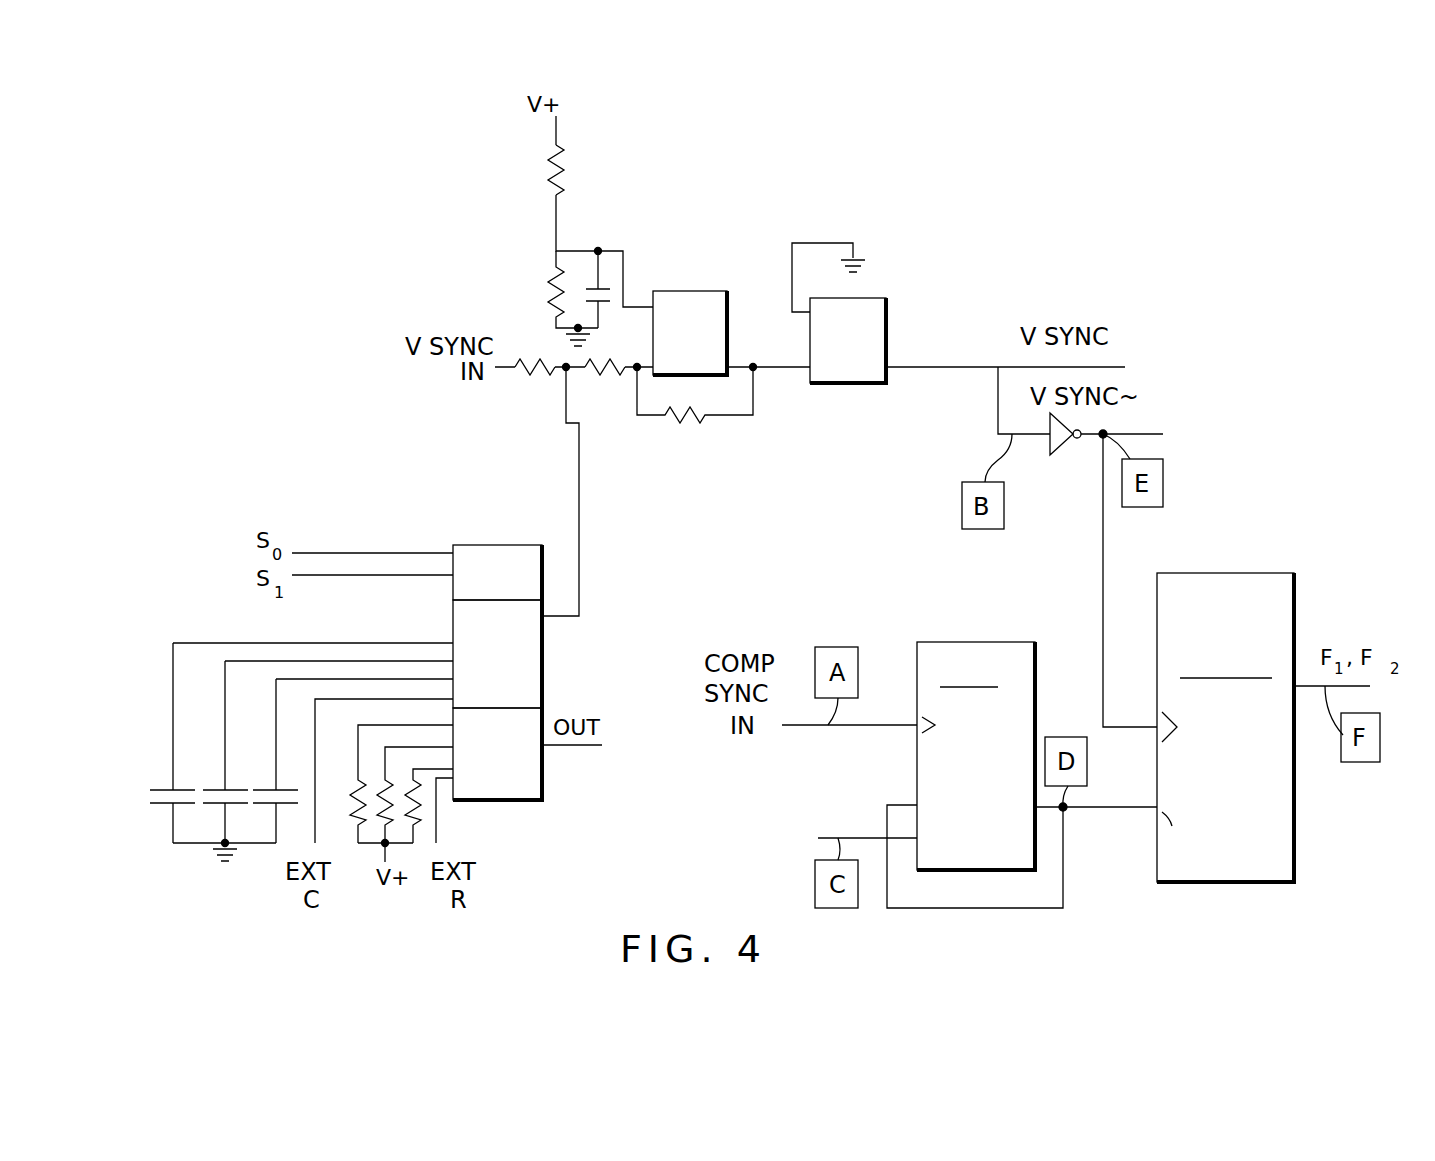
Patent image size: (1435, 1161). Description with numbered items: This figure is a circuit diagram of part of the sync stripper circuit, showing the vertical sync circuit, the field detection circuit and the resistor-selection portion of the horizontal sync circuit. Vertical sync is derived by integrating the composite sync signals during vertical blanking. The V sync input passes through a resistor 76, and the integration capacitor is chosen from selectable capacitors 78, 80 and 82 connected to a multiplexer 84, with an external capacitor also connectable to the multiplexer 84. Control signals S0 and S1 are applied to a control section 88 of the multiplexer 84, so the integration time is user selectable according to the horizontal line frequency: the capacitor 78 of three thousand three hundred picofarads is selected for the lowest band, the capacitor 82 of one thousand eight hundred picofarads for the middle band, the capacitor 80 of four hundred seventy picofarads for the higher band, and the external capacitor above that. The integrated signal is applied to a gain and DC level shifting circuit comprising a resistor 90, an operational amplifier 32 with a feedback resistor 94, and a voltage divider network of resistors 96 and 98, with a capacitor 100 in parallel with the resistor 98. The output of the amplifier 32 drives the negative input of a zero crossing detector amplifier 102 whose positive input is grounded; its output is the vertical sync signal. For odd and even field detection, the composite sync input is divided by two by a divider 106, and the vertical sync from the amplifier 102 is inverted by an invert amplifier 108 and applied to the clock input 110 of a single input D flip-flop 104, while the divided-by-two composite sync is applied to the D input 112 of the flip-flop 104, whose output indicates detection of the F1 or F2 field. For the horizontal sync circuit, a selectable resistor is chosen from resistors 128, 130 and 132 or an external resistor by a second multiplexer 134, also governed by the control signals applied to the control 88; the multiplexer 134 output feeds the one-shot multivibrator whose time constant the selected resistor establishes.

The comparator 32 is at (730, 322).
The resistor 76 is at (535, 375).
The capacitor 78 is at (156, 788).
The capacitor 80 is at (258, 788).
The capacitor 82 is at (208, 788).
The multiplexer 84 is at (542, 670).
The control section 88 is at (500, 545).
The resistor 90 is at (603, 375).
The feedback resistor 94 is at (685, 423).
The resistor 96 is at (563, 165).
The resistor 98 is at (553, 291).
The capacitor 100 is at (605, 290).
The zero crossing detector amplifier 102 is at (888, 320).
The D flip-flop 104 is at (1250, 573).
The divider 106 is at (975, 642).
The invert amplifier 108 is at (1063, 452).
The clock input 110 is at (1170, 722).
The D input 112 is at (1165, 812).
The resistor 128 is at (345, 772).
The resistor 130 is at (375, 785).
The resistor 132 is at (402, 790).
The multiplexer 134 is at (518, 800).